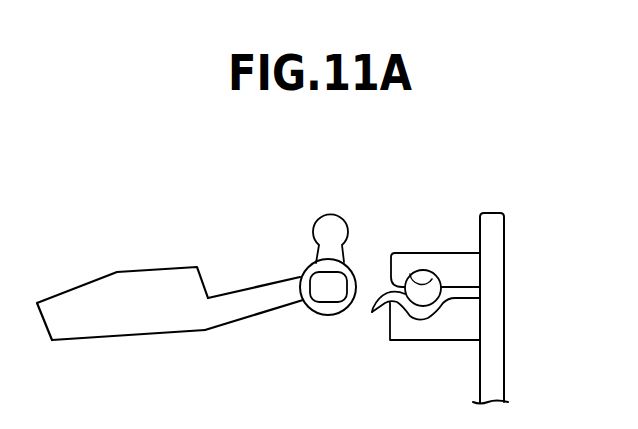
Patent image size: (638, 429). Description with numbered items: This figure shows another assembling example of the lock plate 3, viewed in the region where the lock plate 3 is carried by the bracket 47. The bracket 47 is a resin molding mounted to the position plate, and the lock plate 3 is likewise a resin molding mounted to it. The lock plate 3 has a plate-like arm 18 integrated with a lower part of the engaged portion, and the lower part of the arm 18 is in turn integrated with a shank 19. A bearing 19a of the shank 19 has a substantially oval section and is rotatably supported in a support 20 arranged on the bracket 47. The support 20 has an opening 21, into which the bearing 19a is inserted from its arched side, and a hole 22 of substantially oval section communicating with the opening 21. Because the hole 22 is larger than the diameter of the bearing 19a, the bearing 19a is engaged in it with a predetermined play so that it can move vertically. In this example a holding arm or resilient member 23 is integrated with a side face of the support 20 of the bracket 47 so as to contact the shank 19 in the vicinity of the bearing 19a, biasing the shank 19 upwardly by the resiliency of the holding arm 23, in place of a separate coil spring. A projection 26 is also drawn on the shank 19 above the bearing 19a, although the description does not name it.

The lock plate 3 is at (137, 338).
The plate-like arm 18 is at (242, 306).
The shank 19 is at (318, 316).
The bearing 19a is at (320, 288).
The projection 26 is at (323, 228).
The opening 21 is at (390, 287).
The hole 22 is at (433, 278).
The support 20 is at (437, 251).
The holding arm 23 is at (373, 313).
The bracket 47 is at (495, 363).